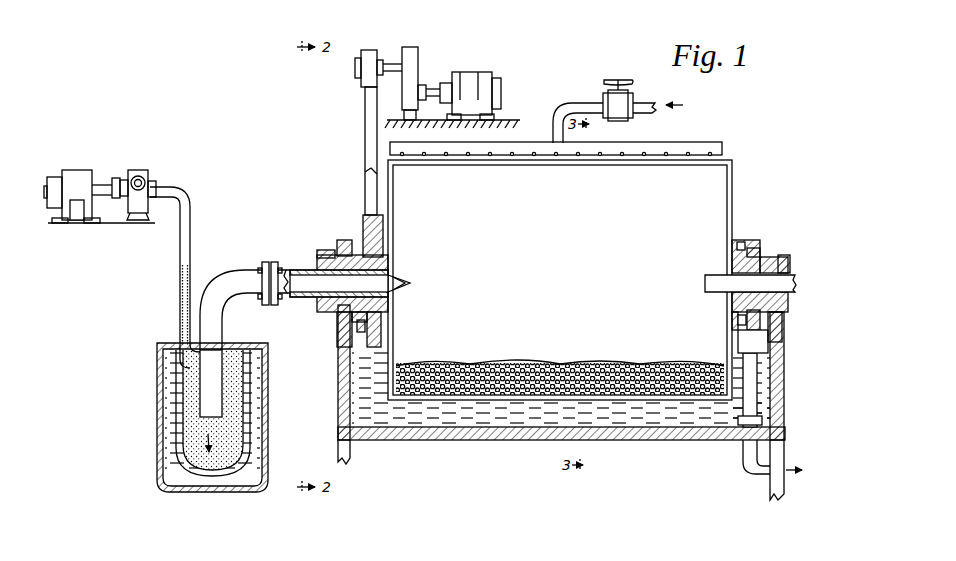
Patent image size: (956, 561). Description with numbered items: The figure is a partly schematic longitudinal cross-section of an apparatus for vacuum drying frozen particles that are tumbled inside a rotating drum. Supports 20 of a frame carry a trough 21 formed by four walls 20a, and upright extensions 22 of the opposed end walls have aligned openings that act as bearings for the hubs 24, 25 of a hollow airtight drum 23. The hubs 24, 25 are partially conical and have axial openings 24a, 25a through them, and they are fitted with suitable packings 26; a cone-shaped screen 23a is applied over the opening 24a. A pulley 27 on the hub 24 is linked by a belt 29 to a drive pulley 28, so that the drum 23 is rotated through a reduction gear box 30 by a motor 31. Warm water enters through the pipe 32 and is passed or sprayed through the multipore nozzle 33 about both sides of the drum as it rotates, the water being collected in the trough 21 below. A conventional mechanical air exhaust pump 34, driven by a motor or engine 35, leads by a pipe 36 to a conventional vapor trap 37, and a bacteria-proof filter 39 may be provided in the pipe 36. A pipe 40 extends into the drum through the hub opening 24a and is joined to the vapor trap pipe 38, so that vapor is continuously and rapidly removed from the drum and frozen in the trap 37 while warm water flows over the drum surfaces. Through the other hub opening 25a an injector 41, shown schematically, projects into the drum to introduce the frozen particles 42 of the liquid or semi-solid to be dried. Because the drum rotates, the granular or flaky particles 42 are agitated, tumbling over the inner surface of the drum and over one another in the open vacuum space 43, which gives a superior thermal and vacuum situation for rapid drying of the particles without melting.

The supports 20 is at (352, 460).
The walls 20a is at (794, 377).
The trough 21 is at (762, 340).
The upright extensions 22 is at (338, 338).
The hollow airtight drum 23 is at (394, 214).
The cone-shaped screen 23a is at (400, 283).
The hub 24 is at (352, 248).
The axial opening 24a is at (405, 291).
The hub 25 is at (766, 257).
The axial opening 25a is at (708, 287).
The packings 26 is at (322, 254).
The pulley 27 is at (384, 234).
The drive pulley 28 is at (360, 86).
The belt 29 is at (366, 138).
The reduction gear box 30 is at (414, 65).
The motor 31 is at (490, 75).
The pipe 32 is at (650, 104).
The multipore nozzle 33 is at (700, 142).
The mechanical air exhaust pump 34 is at (141, 170).
The motor or engine 35 is at (77, 173).
The pipe 36 is at (191, 232).
The vapor trap 37 is at (158, 438).
The vapor trap pipe 38 is at (240, 270).
The bacteria-proof filter 39 is at (180, 308).
The pipe 40 is at (286, 296).
The injector 41 is at (712, 272).
The frozen particles 42 is at (480, 362).
The open vacuum space 43 is at (716, 218).